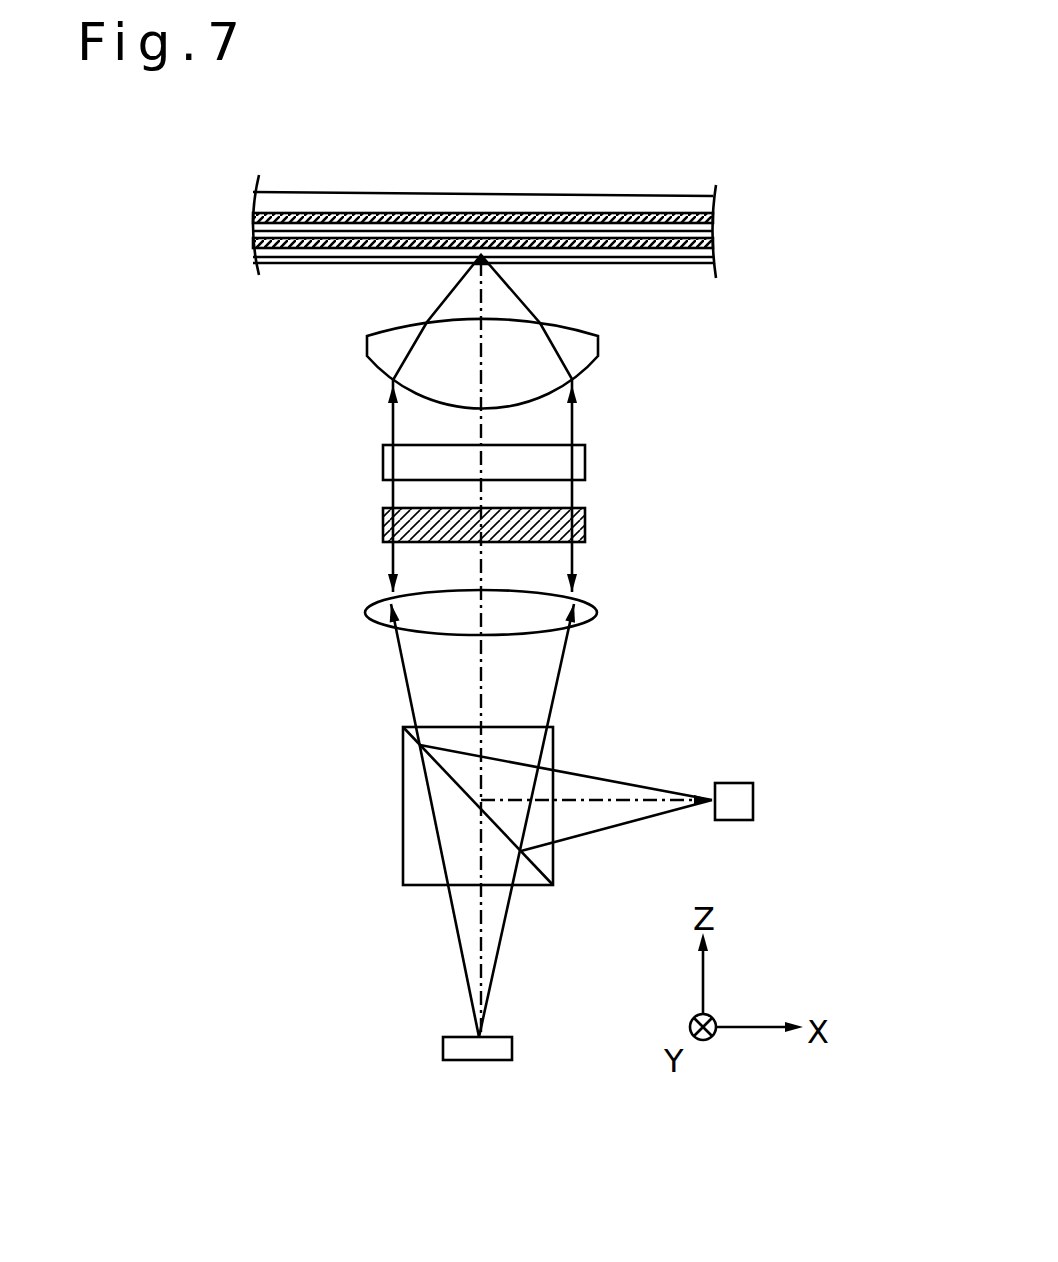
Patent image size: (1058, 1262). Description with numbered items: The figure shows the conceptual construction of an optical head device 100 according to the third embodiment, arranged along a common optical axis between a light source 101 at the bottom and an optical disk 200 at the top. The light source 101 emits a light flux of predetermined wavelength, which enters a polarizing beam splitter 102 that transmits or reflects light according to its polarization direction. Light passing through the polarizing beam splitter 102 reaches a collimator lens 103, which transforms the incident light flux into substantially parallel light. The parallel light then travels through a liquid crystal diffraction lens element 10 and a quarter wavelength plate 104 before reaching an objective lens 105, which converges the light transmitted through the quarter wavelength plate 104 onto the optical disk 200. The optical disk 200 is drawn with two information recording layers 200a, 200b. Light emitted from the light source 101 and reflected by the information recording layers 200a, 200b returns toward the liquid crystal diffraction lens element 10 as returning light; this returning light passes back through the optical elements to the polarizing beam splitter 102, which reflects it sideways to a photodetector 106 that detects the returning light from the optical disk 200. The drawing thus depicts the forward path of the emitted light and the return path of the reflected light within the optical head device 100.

The optical disk 200 is at (575, 192).
The information recording layer 200a is at (588, 257).
The information recording layer 200b is at (650, 257).
The optical head device 100 is at (213, 320).
The light source 101 is at (443, 1048).
The polarizing beam splitter 102 is at (416, 757).
The collimator lens 103 is at (375, 620).
The liquid crystal diffraction lens element 10 is at (383, 528).
The quarter wavelength plate 104 is at (383, 462).
The objective lens 105 is at (371, 352).
The photodetector 106 is at (737, 806).